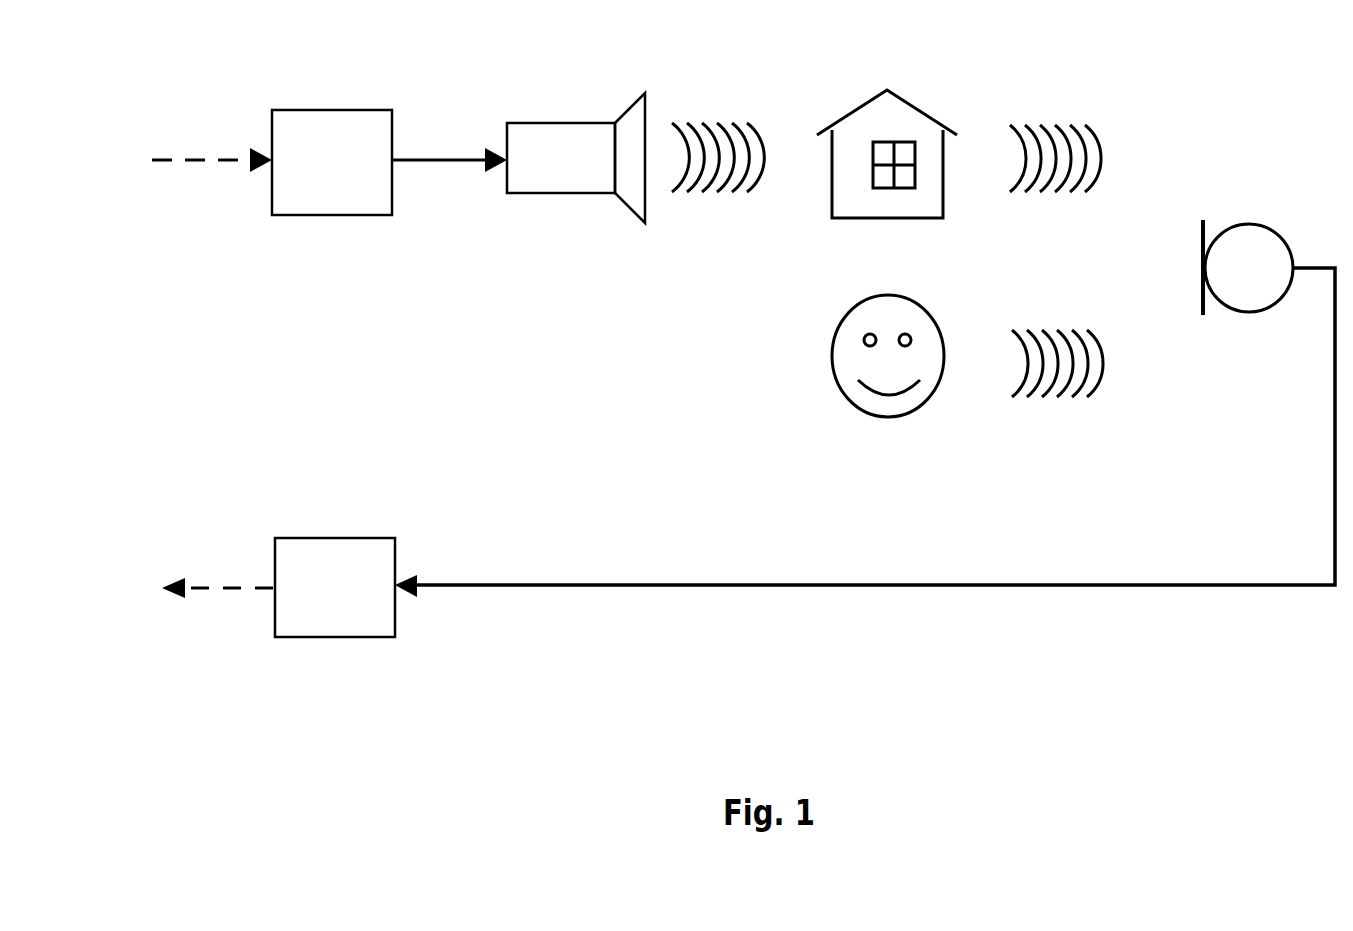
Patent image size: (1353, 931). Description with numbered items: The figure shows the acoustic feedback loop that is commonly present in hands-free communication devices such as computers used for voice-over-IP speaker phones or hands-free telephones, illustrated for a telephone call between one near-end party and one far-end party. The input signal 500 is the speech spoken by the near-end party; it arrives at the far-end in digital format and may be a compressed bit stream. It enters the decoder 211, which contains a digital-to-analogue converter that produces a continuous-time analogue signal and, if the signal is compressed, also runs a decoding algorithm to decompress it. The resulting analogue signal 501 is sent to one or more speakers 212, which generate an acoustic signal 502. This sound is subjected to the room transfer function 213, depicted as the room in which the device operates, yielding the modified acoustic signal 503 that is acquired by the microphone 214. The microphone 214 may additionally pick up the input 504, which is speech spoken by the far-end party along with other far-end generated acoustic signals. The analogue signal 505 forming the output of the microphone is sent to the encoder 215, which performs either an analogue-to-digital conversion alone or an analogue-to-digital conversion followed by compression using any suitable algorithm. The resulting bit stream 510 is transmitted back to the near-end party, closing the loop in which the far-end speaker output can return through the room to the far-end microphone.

The decoder 211 is at (317, 190).
The speaker 212 is at (545, 181).
The room transfer function 213 is at (887, 118).
The microphone 214 is at (1223, 287).
The encoder 215 is at (320, 616).
The input signal 500 is at (212, 142).
The analogue signal 501 is at (449, 142).
The acoustic signal 502 is at (718, 136).
The modified acoustic signal 503 is at (1055, 134).
The input 504 is at (1057, 342).
The analogue signal 505 is at (865, 432).
The bit stream 510 is at (217, 567).